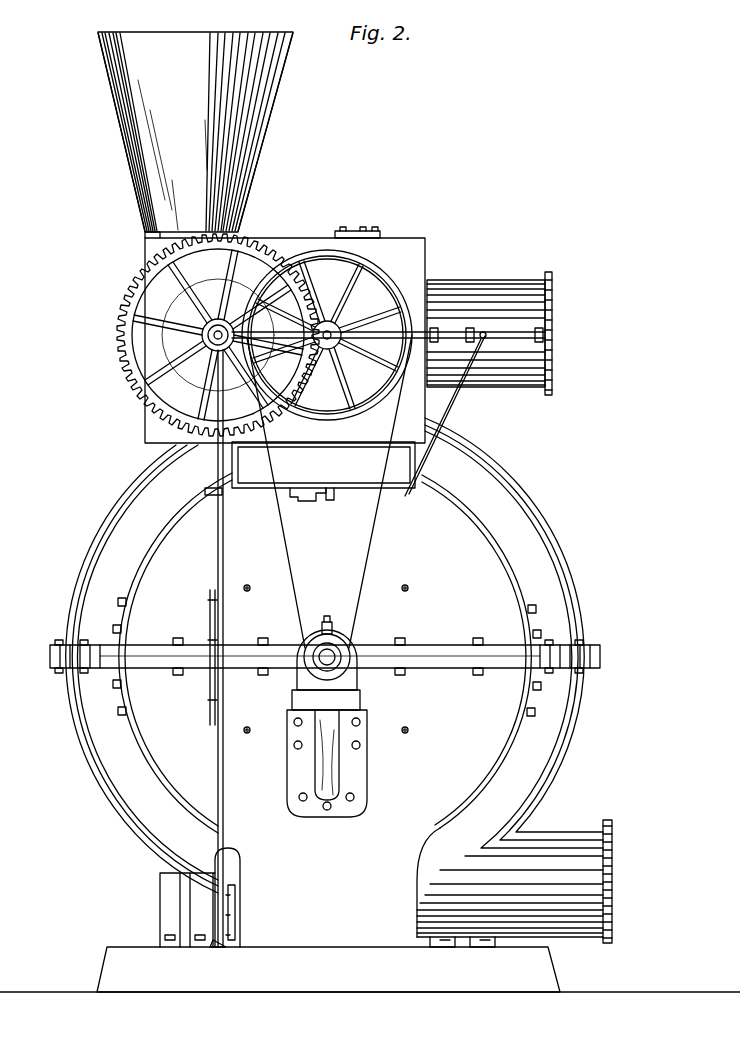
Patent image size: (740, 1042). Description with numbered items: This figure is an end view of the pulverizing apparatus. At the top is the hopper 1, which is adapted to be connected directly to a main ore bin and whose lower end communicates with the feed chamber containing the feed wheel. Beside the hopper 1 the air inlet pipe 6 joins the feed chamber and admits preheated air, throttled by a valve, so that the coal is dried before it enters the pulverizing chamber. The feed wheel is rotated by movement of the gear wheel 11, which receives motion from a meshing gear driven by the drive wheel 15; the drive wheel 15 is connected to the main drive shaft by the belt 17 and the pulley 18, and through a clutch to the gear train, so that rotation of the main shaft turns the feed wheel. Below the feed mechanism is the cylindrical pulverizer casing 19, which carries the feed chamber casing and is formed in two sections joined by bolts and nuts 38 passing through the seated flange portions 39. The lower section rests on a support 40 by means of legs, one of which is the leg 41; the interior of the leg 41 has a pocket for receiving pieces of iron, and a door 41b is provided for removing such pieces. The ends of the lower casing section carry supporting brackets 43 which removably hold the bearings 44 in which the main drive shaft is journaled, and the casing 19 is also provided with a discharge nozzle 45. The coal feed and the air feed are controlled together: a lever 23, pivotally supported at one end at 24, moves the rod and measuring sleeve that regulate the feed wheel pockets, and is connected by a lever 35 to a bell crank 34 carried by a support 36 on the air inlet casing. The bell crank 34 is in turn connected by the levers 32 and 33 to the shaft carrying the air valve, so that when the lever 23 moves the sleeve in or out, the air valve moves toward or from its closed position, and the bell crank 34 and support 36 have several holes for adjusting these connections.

The hopper 1 is at (265, 128).
The gear wheel 11 is at (262, 240).
The drive wheel 15 is at (395, 278).
The air inlet pipe 6 is at (508, 282).
The lever 32 is at (460, 405).
The support 36 is at (322, 452).
The lever 35 is at (210, 500).
The bell crank 34 is at (305, 500).
The lever 33 is at (370, 500).
The belt 17 is at (373, 543).
The pulverizer casing 19 is at (520, 573).
The bolts and nuts 38 is at (180, 640).
The flange portions 39 is at (432, 655).
The bearing 44 is at (327, 622).
The pulley 18 is at (348, 650).
The supporting bracket 43 is at (370, 768).
The lever 23 is at (225, 808).
The door 41b is at (237, 920).
The pivot 24 is at (218, 948).
The leg 41 is at (285, 935).
The support 40 is at (360, 985).
The discharge nozzle 45 is at (572, 832).